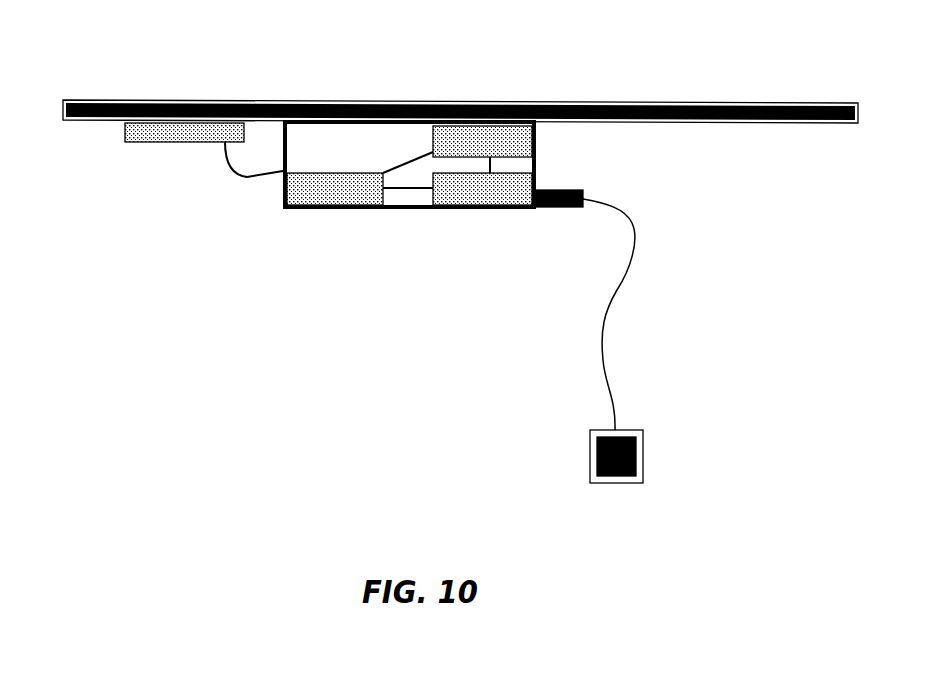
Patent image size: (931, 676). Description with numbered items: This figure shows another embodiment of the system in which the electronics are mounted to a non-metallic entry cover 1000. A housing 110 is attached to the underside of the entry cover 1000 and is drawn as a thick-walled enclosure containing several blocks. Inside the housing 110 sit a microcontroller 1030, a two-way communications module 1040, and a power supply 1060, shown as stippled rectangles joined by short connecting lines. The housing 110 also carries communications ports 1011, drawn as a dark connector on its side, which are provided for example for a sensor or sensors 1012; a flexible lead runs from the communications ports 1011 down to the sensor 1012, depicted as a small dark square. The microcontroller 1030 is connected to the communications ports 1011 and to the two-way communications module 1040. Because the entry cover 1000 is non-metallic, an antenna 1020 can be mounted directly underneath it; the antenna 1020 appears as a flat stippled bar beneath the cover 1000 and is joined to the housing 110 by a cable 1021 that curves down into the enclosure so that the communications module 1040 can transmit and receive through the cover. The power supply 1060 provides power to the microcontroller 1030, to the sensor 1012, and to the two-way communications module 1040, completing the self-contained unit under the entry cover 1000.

The non-metallic entry cover 1000 is at (457, 98).
The antenna 1020 is at (157, 157).
The cable 1021 is at (223, 180).
The housing 110 is at (268, 213).
The two-way communications module 1040 is at (325, 198).
The microcontroller 1030 is at (490, 198).
The power supply 1060 is at (487, 148).
The communications ports 1011 is at (592, 192).
The sensor 1012 is at (648, 448).